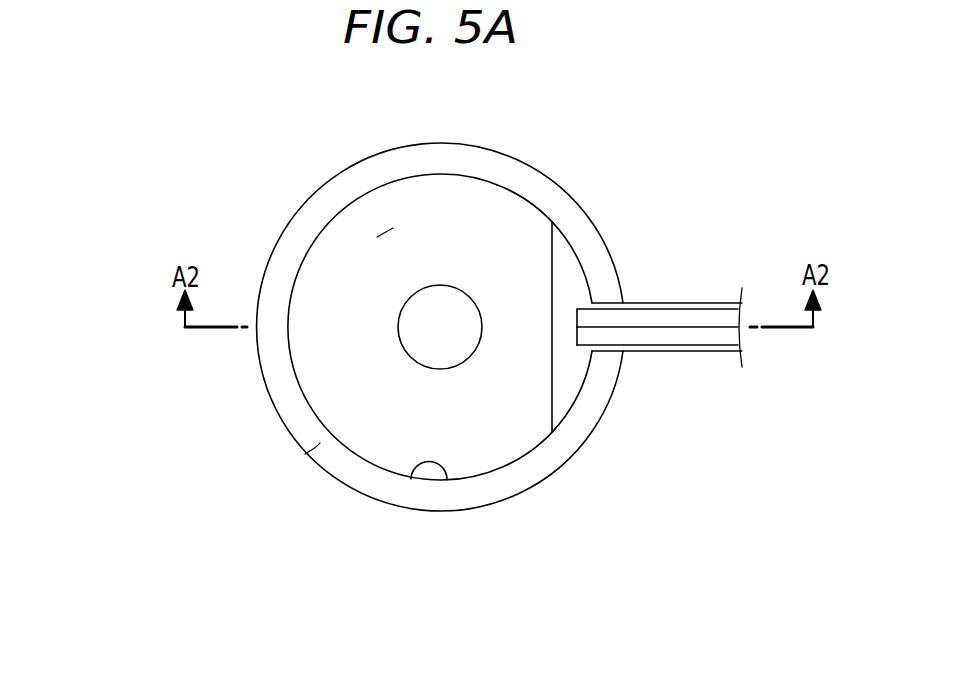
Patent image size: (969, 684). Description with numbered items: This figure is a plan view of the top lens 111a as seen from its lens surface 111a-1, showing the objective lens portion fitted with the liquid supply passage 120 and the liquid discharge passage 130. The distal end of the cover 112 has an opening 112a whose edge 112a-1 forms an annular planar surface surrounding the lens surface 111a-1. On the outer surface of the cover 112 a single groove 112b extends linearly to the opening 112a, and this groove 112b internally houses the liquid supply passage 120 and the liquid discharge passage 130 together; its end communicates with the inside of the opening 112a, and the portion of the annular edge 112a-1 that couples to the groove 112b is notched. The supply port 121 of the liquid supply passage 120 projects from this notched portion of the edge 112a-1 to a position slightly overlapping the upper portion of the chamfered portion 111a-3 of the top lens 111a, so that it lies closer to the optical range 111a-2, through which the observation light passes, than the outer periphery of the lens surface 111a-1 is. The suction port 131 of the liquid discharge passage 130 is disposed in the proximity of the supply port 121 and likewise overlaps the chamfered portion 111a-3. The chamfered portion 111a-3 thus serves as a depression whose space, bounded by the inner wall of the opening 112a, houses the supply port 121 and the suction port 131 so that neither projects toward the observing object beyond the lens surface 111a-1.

The cover 112 is at (315, 152).
The top lens 111a is at (482, 178).
The lens surface 111a-1 is at (382, 230).
The optical range 111a-2 is at (400, 310).
The chamfered portion 111a-3 is at (558, 258).
The opening 112a is at (413, 464).
The edge 112a-1 is at (305, 454).
The groove 112b is at (722, 303).
The liquid discharge passage 130 is at (683, 303).
The suction port 131 is at (577, 317).
The liquid supply passage 120 is at (683, 351).
The supply port 121 is at (577, 332).